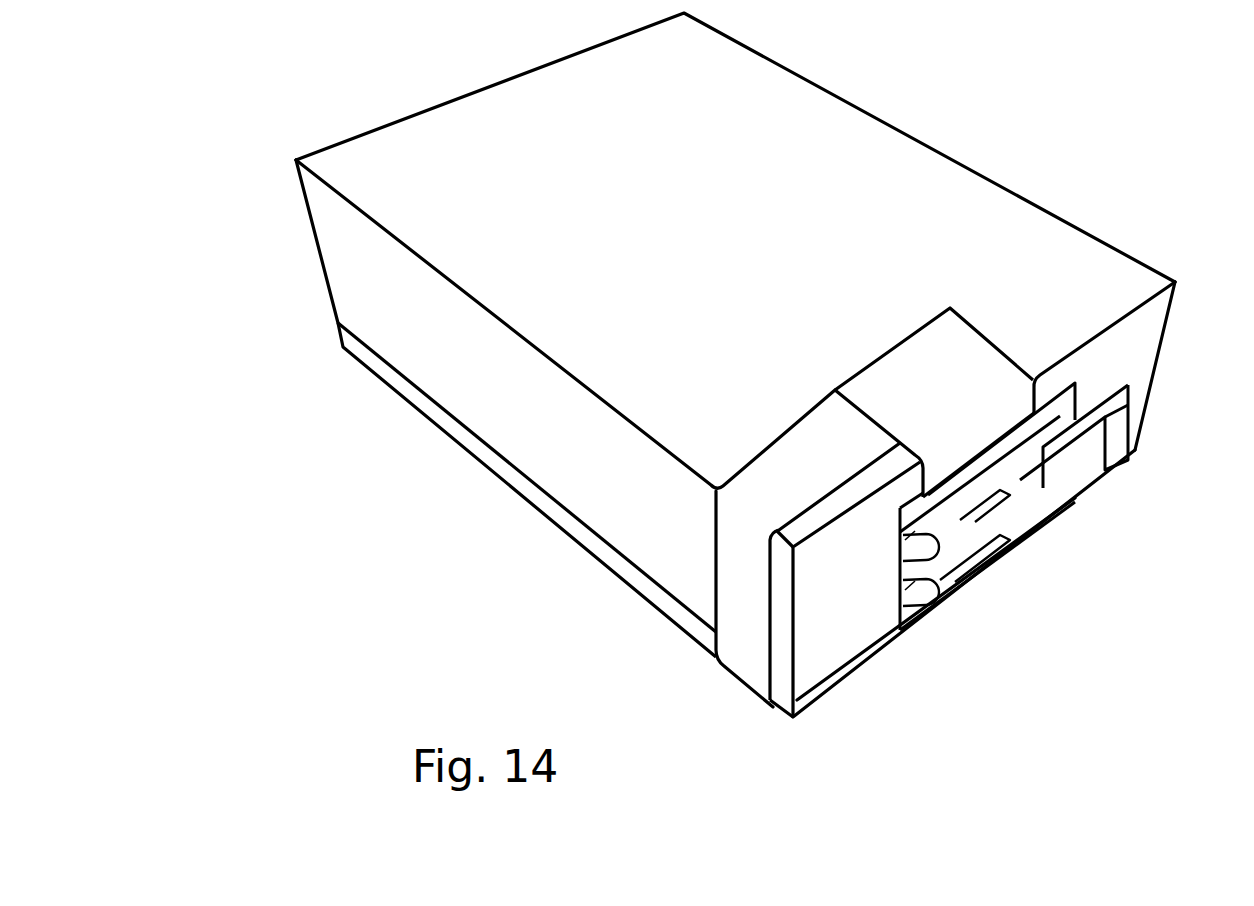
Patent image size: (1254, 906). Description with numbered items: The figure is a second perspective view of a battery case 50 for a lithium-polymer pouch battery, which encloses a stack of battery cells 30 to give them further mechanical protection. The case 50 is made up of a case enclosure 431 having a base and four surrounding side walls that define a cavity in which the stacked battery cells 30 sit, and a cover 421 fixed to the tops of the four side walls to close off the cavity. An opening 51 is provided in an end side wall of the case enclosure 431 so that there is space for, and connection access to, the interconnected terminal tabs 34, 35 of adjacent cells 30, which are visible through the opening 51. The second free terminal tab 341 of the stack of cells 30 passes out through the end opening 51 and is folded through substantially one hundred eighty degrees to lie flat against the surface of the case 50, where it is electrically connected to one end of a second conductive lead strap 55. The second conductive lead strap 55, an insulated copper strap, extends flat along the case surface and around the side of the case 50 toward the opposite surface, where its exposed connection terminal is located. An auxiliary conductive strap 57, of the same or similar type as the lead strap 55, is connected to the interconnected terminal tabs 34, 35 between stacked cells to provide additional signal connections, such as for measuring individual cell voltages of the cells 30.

The case 50 is at (1162, 218).
The case enclosure 431 is at (913, 193).
The cover 421 is at (553, 510).
The second free terminal tab 341 is at (900, 382).
The second conductive lead strap 55 is at (772, 492).
The opening 51 is at (1057, 383).
The auxiliary conductive strap 57 is at (1077, 478).
The interconnected terminal tab 34 is at (1007, 487).
The interconnected terminal tab 35 is at (962, 567).
The battery cells 30 is at (897, 528).